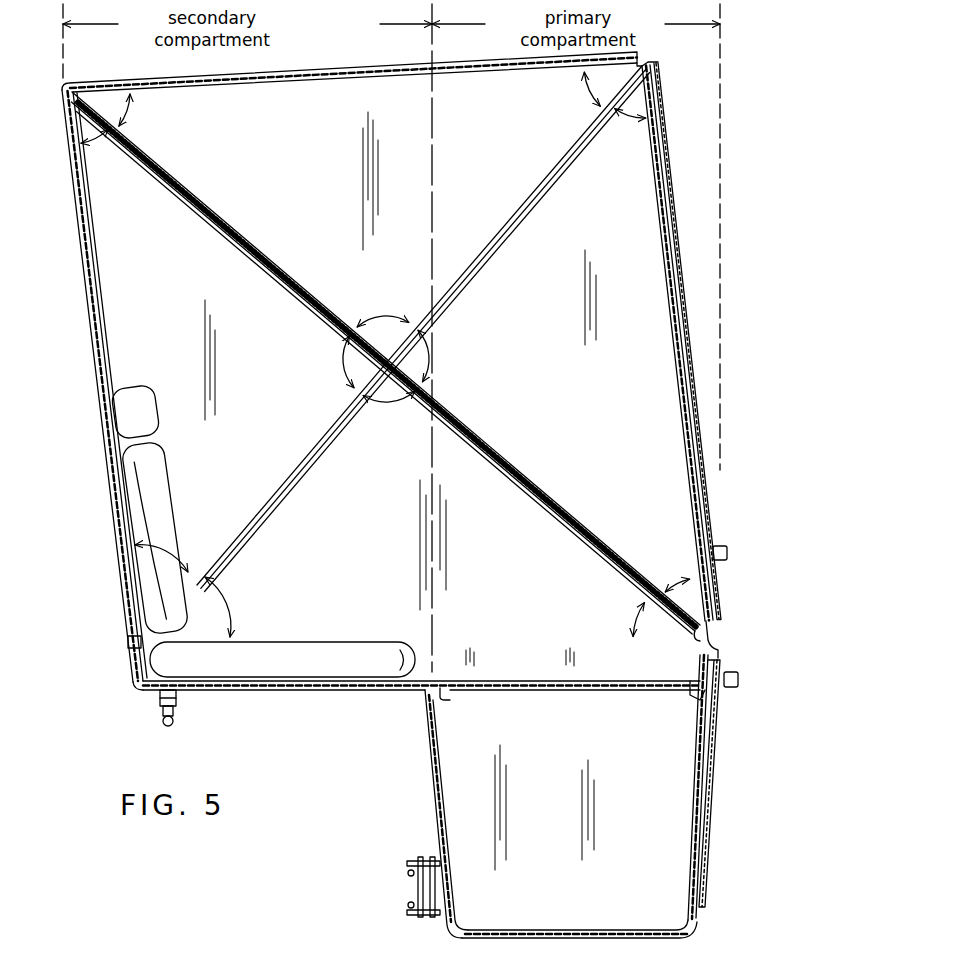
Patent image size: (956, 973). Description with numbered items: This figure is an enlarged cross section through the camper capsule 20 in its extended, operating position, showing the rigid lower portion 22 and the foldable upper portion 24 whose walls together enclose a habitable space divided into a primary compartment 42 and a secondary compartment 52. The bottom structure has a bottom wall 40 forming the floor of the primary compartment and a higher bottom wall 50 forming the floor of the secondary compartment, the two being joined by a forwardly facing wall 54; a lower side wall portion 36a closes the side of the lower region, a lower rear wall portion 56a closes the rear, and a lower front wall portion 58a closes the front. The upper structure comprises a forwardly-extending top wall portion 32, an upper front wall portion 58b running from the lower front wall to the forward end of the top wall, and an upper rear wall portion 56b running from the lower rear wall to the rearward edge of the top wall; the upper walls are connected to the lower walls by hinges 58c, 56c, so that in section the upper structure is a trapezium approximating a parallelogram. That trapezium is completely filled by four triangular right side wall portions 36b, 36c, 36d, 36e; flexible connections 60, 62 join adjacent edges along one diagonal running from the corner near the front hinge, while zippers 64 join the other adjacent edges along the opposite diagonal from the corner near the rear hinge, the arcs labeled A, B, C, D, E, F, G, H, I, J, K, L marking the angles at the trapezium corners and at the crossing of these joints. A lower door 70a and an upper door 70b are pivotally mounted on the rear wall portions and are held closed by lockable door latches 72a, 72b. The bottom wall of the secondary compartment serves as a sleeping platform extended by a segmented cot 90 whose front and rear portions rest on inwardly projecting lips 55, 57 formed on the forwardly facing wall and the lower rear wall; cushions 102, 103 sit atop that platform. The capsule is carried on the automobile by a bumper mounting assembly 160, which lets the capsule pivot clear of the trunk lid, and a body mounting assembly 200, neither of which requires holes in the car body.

The camper capsule 20 is at (785, 140).
The lower portion (bottom structure) 22 is at (728, 948).
The upper portion (foldable upper structure) 24 is at (705, 268).
The top wall portion 32 is at (305, 72).
The lower side wall portion 36a is at (572, 753).
The right side wall portion 36b is at (508, 226).
The right side wall portion 36c is at (548, 506).
The right side wall portion 36d is at (310, 440).
The right side wall portion 36e is at (258, 246).
The bottom wall 40 is at (584, 930).
The primary compartment 42 is at (539, 338).
The bottom wall 50 is at (292, 692).
The secondary compartment 52 is at (269, 338).
The forwardly facing wall 54 is at (433, 780).
The inwardly projecting lip 55 is at (450, 700).
The lower rear wall portion 56a is at (690, 893).
The upper rear wall portion 56b is at (678, 408).
The hinge 56c is at (720, 630).
The inwardly projecting lip 57 is at (690, 698).
The lower front wall portion 58a is at (130, 680).
The upper front wall portion 58b is at (92, 303).
The hinge 58c is at (126, 644).
The flexible connection 60 is at (480, 266).
The flexible connection 62 is at (288, 488).
The zipper 64 is at (462, 398).
The lower door 70a is at (716, 781).
The upper door 70b is at (713, 503).
The lockable door latch 72a is at (740, 681).
The lockable door latch 72b is at (730, 553).
The cot 90 is at (512, 692).
The cushion 102 is at (325, 642).
The cushion 103 is at (158, 472).
The bumper mounting assembly 160 is at (398, 883).
The body mounting assembly 200 is at (152, 716).
The angle A is at (578, 93).
The angle B is at (625, 136).
The angle C is at (688, 572).
The angle D is at (640, 618).
The angle E is at (220, 604).
The angle F is at (160, 540).
The angle G is at (114, 164).
The angle H is at (138, 115).
The angle I is at (393, 312).
The angle J is at (432, 362).
The angle K is at (364, 408).
The angle L is at (340, 360).